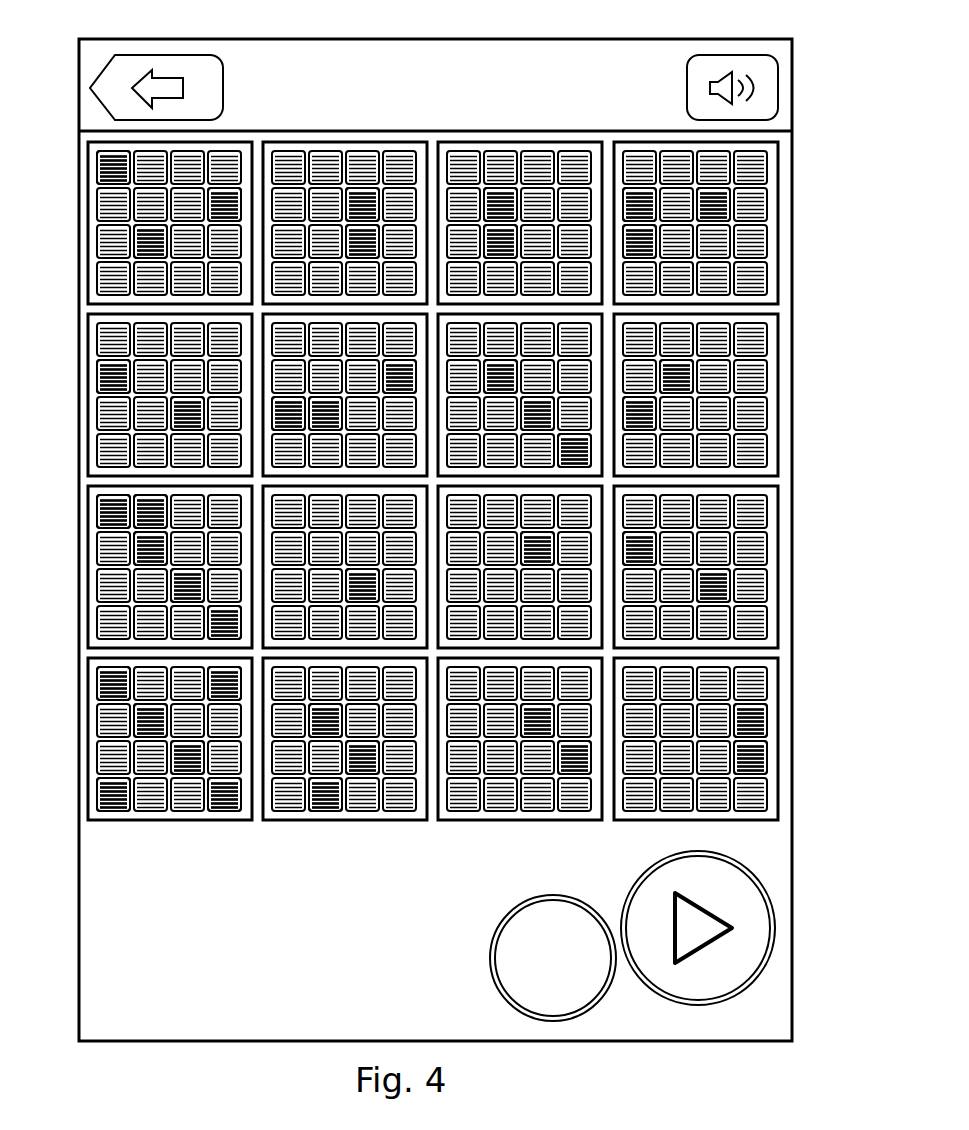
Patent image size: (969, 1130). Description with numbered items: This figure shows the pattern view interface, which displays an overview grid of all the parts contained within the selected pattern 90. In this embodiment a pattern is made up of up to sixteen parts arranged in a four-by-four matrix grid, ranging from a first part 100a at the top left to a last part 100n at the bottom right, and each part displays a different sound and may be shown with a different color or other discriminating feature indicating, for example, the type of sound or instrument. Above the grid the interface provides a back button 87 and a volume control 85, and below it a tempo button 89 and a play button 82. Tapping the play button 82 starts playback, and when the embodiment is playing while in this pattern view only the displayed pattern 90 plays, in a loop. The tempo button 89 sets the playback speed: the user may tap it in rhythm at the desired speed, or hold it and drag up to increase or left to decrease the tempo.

The pattern 90 is at (447, 23).
The back button 87 is at (155, 57).
The volume control 85 is at (723, 55).
The part 100a is at (88, 228).
The part 100n is at (780, 732).
The tempo button 89 is at (597, 1005).
The play button 82 is at (707, 1003).